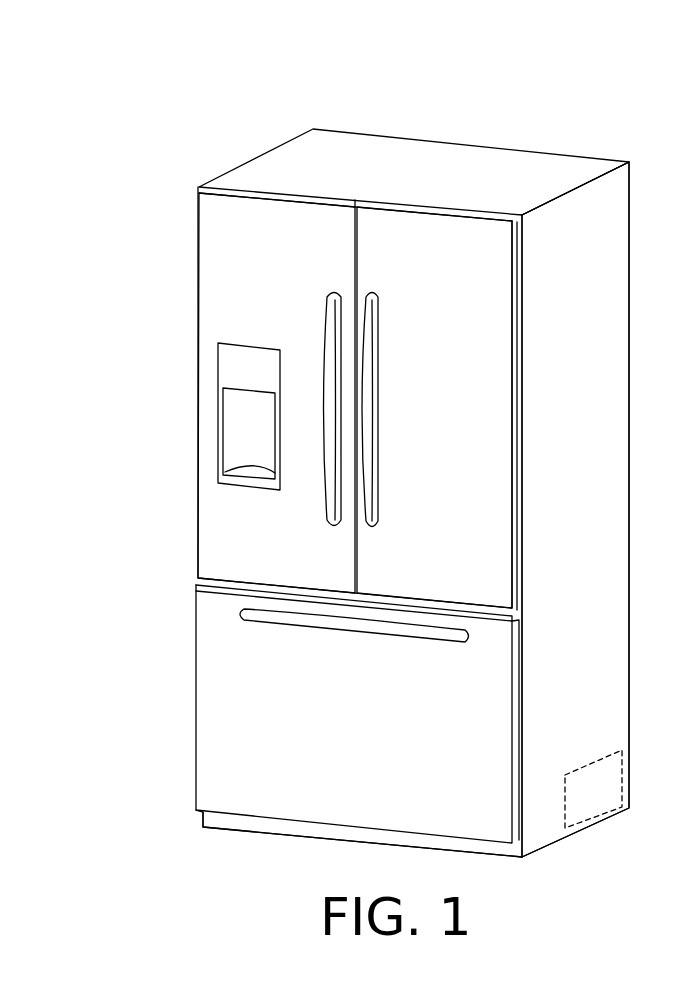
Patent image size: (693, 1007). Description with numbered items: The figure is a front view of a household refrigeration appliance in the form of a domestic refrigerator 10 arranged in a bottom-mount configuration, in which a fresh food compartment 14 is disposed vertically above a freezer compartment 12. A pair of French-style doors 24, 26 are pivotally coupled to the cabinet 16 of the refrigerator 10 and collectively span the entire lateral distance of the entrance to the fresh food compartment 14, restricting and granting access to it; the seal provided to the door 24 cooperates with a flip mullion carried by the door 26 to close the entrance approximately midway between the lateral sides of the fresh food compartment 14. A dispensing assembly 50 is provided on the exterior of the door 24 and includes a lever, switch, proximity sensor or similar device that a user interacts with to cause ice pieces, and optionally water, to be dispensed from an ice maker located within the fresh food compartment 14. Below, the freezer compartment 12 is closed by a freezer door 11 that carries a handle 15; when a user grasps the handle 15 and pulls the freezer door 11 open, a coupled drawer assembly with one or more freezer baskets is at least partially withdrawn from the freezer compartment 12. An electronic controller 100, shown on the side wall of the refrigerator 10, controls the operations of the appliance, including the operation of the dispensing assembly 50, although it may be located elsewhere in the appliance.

The refrigerator 10 is at (519, 107).
The freezer door 11 is at (310, 812).
The freezer compartment 12 is at (258, 675).
The fresh food compartment 14 is at (483, 403).
The handle 15 is at (344, 628).
The cabinet 16 is at (607, 577).
The door 24 is at (219, 282).
The door 26 is at (497, 332).
The dispensing assembly 50 is at (235, 418).
The electronic controller 100 is at (616, 807).